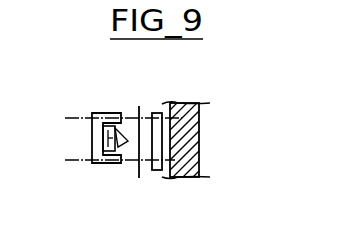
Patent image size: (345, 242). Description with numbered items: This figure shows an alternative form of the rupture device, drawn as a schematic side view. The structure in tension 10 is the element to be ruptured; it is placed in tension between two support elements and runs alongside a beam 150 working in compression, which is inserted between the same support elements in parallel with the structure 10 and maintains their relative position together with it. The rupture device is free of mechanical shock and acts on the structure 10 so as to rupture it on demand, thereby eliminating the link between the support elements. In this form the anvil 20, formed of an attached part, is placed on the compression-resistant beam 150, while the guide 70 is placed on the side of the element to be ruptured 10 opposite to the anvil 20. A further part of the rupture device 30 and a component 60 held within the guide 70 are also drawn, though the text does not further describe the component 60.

The structure in tension 10 is at (143, 175).
The anvil 20 is at (157, 172).
The rupture device element 30 is at (121, 149).
The insert 60 is at (92, 139).
The guide 70 is at (101, 113).
The beam 150 is at (193, 135).